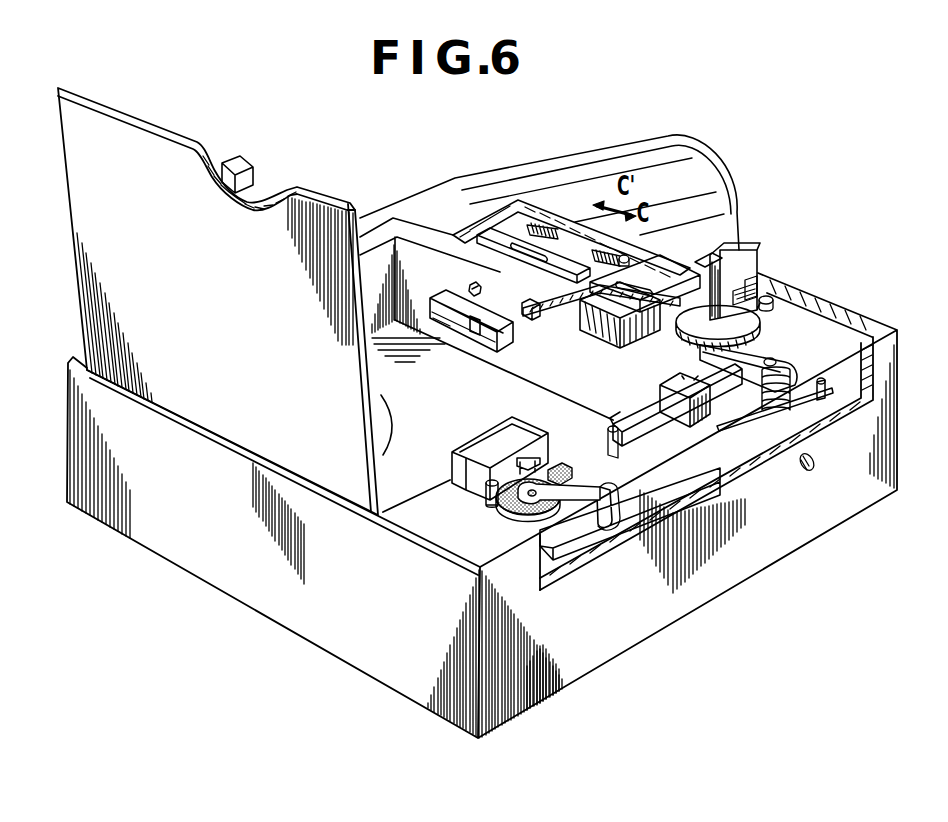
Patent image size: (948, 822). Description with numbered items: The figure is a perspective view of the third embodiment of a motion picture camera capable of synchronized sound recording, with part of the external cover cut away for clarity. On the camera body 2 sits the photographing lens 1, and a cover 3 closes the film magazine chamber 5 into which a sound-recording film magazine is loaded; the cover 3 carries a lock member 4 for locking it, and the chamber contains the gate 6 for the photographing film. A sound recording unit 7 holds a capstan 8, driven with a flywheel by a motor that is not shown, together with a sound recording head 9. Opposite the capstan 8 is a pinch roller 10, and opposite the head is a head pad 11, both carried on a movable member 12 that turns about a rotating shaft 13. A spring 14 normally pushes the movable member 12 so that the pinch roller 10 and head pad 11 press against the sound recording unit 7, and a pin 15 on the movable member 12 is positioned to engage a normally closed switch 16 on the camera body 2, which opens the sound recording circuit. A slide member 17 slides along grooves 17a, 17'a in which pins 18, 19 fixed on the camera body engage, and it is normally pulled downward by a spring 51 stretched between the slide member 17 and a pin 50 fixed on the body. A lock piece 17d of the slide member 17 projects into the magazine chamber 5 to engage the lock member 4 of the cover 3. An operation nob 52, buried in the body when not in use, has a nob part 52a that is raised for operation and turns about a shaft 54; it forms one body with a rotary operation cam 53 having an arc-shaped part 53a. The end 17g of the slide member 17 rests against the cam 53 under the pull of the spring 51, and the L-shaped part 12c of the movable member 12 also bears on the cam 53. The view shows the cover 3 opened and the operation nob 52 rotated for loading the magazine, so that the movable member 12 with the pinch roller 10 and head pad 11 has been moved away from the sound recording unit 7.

The photographing lens 1 is at (676, 158).
The camera body 2 is at (680, 615).
The cover of the magazine chamber 3 is at (168, 153).
The lock member 4 is at (235, 158).
The film magazine chamber 5 is at (372, 250).
The gate 6 is at (487, 342).
The sound recording unit 7 is at (493, 437).
The capstan 8 is at (489, 494).
The sound recording head 9 is at (523, 457).
The pinch roller 10 is at (517, 507).
The head pad 11 is at (563, 466).
The movable member 12 is at (641, 494).
The L-shaped part 12c is at (735, 352).
The rotating shaft 13 is at (770, 364).
The spring 14 is at (803, 392).
The pin 15 is at (662, 420).
The switch 16 is at (708, 394).
The slide member 17 is at (564, 204).
The groove 17'a is at (496, 260).
The groove 17a is at (683, 290).
The lock piece 17d is at (528, 325).
The end of the slide member 17g is at (710, 257).
The pin 18 is at (549, 394).
The pin 19 is at (527, 257).
The pin 50 is at (617, 287).
The spring 51 is at (556, 236).
The operation nob 52 is at (757, 277).
The nob part 52a is at (752, 263).
The rotary operation cam 53 is at (773, 313).
The arc-shaped part 53a is at (640, 362).
The pin 54 is at (763, 300).